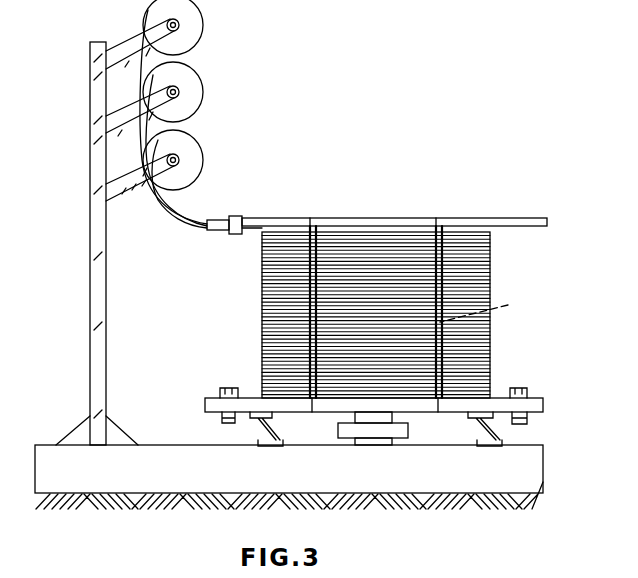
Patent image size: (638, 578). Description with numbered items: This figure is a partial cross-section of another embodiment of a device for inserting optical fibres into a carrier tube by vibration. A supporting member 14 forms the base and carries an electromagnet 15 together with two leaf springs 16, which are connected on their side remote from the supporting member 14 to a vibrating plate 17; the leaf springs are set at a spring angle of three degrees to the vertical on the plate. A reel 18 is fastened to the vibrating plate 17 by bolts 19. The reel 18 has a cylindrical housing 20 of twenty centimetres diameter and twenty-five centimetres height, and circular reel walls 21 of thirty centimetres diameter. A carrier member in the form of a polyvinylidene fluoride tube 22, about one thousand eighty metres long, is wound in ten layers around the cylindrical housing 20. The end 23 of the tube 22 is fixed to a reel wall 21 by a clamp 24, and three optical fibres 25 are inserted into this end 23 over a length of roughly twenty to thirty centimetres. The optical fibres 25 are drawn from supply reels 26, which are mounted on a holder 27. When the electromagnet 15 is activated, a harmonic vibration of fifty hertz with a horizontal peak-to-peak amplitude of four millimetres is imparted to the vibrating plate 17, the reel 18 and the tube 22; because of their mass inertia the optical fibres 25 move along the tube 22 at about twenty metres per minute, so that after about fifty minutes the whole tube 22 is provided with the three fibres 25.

The supporting member 14 is at (533, 472).
The electromagnet 15 is at (338, 432).
The leaf springs 16 is at (478, 440).
The vibrating plate 17 is at (540, 412).
The reel 18 is at (543, 401).
The bolts 19 is at (520, 390).
The cylindrical housing 20 is at (491, 306).
The reel walls 21 is at (536, 220).
The tube 22 is at (490, 262).
The end of tube 23 is at (221, 232).
The clamp 24 is at (238, 216).
The optical fibres 25 is at (153, 203).
The supply reels 26 is at (203, 161).
The holder 27 is at (106, 310).